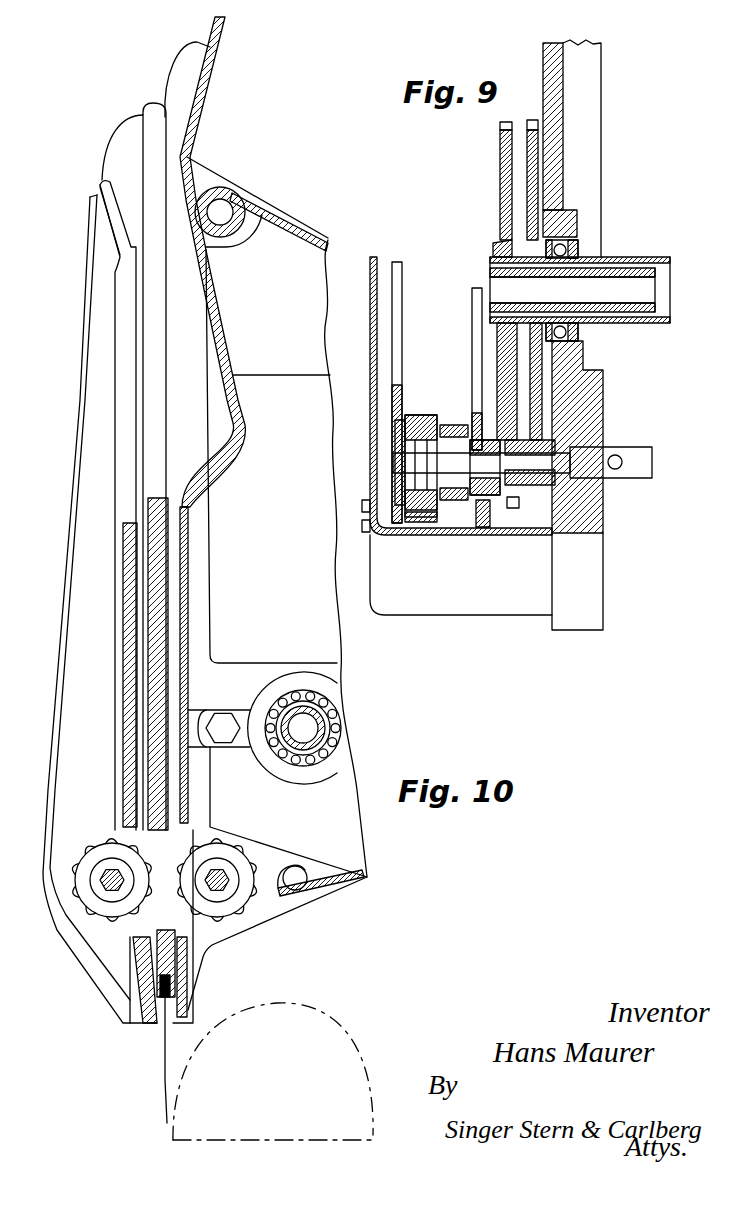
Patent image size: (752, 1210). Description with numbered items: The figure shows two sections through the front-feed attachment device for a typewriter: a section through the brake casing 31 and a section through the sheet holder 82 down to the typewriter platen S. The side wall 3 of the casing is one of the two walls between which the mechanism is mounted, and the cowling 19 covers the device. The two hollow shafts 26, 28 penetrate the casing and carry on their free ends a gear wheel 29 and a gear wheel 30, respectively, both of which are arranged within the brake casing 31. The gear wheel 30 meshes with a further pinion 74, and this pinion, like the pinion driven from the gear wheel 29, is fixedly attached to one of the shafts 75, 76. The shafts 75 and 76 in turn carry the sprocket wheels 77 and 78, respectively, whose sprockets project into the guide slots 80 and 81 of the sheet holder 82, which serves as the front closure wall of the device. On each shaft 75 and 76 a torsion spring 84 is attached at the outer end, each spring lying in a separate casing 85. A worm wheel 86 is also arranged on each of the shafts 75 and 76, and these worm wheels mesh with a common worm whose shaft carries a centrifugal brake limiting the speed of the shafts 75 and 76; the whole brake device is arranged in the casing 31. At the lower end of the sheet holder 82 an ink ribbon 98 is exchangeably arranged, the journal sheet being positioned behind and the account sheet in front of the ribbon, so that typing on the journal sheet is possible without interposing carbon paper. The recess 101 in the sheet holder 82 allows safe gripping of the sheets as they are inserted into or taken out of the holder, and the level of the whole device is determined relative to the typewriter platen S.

In FIG. 9, the side wall 3 is at (548, 65).
In FIG. 10, the cowling 19 is at (270, 217).
In FIG. 10, the hollow shaft 26 is at (338, 725).
In FIG. 9, the hollow shaft 26 is at (643, 258).
In FIG. 10, the hollow shaft 28 is at (338, 740).
In FIG. 9, the hollow shaft 28 is at (640, 317).
In FIG. 9, the gear wheel 29 is at (535, 153).
In FIG. 9, the gear wheel 30 is at (502, 155).
In FIG. 9, the brake casing 31 is at (447, 607).
In FIG. 9, the pinion 74 is at (512, 508).
In FIG. 10, the shaft 75 is at (108, 872).
In FIG. 10, the shaft 76 is at (222, 870).
In FIG. 9, the shaft 76 is at (644, 462).
In FIG. 10, the sprocket wheel 77 is at (95, 903).
In FIG. 10, the sprocket wheel 78 is at (236, 903).
In FIG. 10, the guide slot 80 is at (143, 615).
In FIG. 10, the guide slot 81 is at (178, 642).
In FIG. 10, the sheet holder 82 is at (127, 573).
In FIG. 9, the torsion spring 84 is at (425, 415).
In FIG. 9, the casing 85 is at (422, 522).
In FIG. 9, the worm wheel 86 is at (478, 527).
In FIG. 10, the ink ribbon 98 is at (165, 1062).
In FIG. 10, the recess 101 is at (128, 385).
In FIG. 10, the typewriter platen S is at (368, 1070).